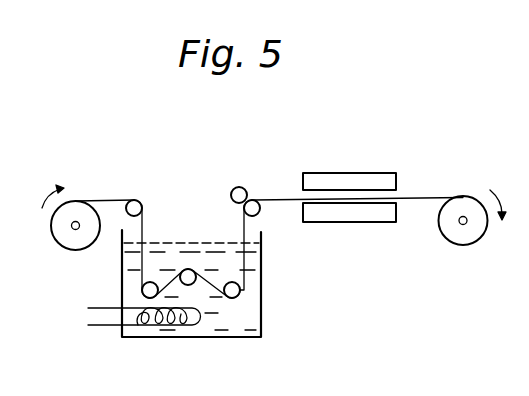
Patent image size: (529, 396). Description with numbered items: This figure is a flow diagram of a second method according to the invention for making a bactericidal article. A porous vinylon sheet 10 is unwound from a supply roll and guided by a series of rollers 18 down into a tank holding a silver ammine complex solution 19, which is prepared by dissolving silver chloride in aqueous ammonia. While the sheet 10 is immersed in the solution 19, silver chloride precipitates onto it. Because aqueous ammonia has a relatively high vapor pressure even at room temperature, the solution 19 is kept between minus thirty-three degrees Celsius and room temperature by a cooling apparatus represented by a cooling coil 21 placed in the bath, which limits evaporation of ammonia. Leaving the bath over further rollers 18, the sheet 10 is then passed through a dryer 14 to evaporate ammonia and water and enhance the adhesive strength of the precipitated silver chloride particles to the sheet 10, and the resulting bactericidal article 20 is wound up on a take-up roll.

The porous vinylon sheet 10 is at (106, 200).
The dryer 14 is at (357, 215).
The guide rollers 18 is at (135, 199).
The silver ammine complex solution 19 is at (237, 325).
The bactericidal article 20 is at (441, 196).
The cooling coil 21 is at (152, 327).